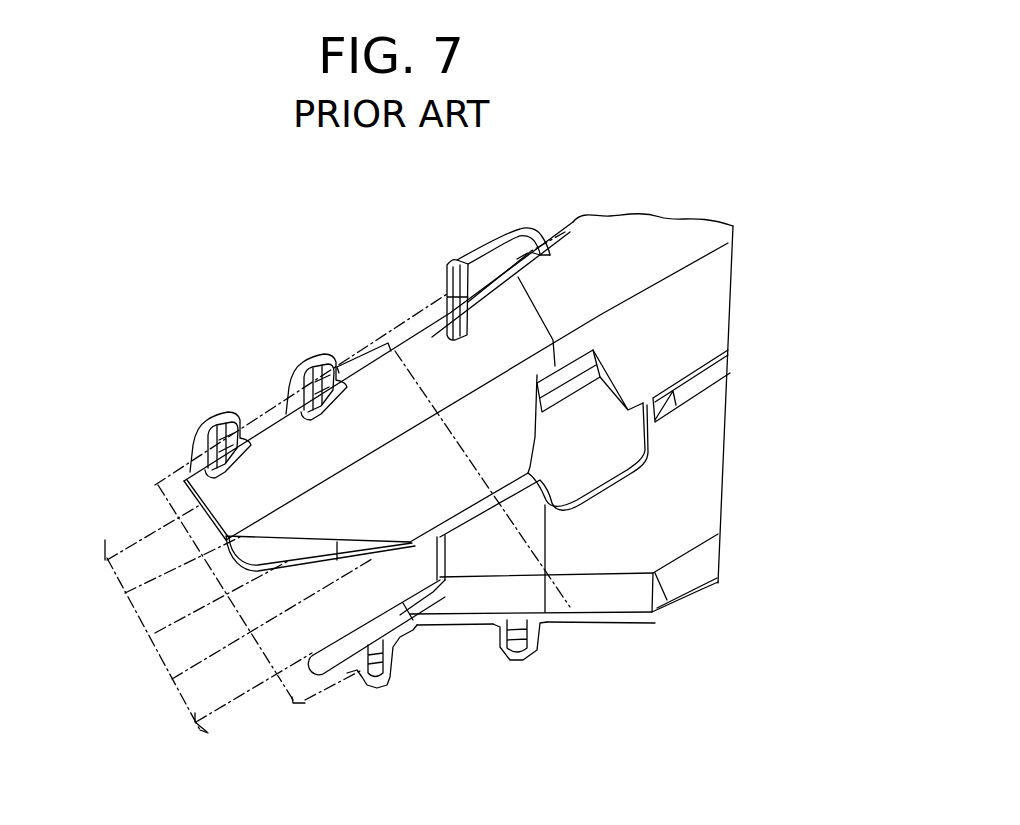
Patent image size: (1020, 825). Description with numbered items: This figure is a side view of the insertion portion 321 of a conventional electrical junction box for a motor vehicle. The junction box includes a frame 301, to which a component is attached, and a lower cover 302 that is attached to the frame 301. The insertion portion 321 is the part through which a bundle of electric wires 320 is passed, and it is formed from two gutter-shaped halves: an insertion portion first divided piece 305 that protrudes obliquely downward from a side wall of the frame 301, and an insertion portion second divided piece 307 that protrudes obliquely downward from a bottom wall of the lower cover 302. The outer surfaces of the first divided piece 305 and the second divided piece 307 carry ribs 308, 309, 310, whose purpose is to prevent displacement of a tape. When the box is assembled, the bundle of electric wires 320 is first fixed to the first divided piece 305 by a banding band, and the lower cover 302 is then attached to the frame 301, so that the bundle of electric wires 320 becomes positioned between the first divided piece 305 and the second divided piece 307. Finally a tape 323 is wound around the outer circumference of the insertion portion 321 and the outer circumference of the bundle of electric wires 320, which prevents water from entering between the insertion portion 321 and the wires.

The frame 301 is at (614, 206).
The lower cover 302 is at (699, 592).
The insertion portion first divided piece 305 is at (425, 330).
The insertion portion second divided piece 307 is at (404, 628).
The rib 308 is at (212, 428).
The rib 309 is at (377, 684).
The rib 310 is at (523, 662).
The bundle of electric wires 320 is at (105, 540).
The insertion portion 321 is at (329, 700).
The tape 323 is at (268, 400).